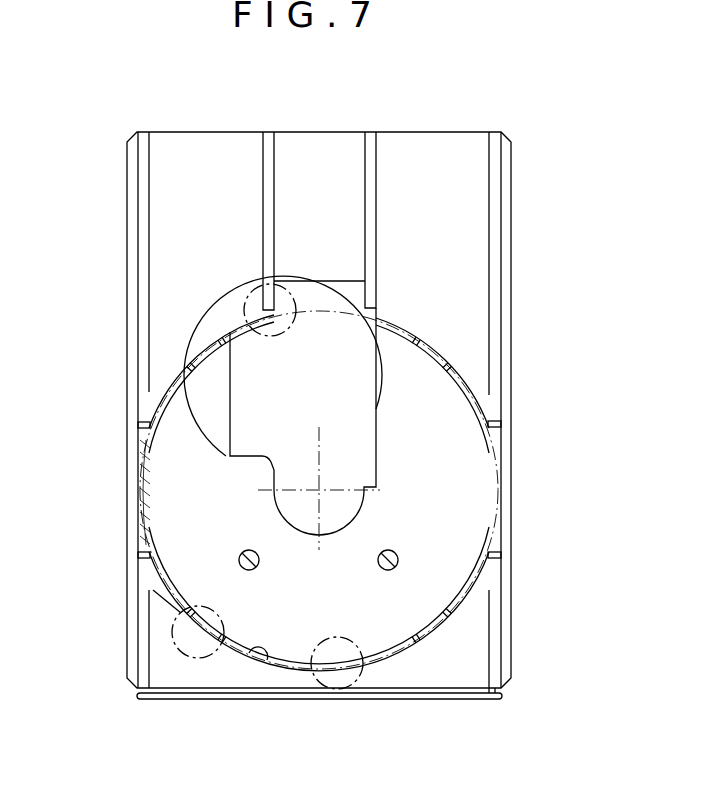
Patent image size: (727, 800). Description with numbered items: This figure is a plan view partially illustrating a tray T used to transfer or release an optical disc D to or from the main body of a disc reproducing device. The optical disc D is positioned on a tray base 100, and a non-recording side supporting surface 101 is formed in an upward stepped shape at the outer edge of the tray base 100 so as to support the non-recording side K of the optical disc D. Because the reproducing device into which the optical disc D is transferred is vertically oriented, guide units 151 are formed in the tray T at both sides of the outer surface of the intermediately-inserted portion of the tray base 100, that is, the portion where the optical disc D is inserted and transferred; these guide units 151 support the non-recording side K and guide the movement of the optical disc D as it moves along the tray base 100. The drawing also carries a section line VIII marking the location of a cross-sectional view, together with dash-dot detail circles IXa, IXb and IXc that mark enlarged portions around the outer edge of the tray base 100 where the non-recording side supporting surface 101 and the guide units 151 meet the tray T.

The tray T is at (527, 317).
The optical disc D is at (487, 492).
The guide unit 151 is at (497, 557).
The non-recording side K is at (137, 482).
The tray base 100 is at (447, 575).
The non-recording side supporting surface 101 is at (258, 656).
The detail circle IXa is at (172, 642).
The detail circle IXb is at (240, 305).
The detail circle IXc is at (363, 678).
The section line VIII- VIII is at (475, 420).